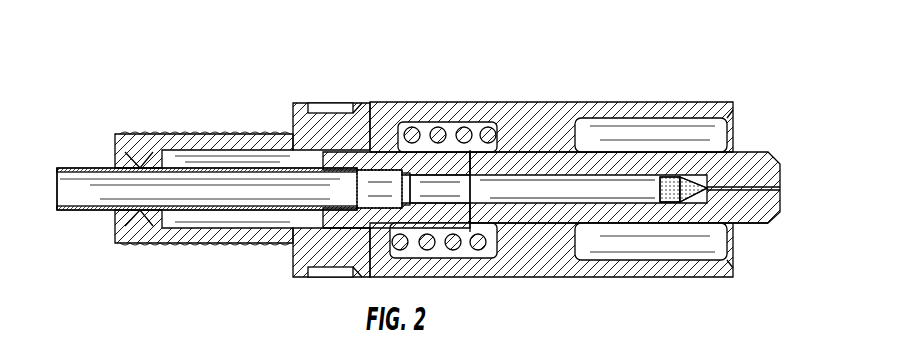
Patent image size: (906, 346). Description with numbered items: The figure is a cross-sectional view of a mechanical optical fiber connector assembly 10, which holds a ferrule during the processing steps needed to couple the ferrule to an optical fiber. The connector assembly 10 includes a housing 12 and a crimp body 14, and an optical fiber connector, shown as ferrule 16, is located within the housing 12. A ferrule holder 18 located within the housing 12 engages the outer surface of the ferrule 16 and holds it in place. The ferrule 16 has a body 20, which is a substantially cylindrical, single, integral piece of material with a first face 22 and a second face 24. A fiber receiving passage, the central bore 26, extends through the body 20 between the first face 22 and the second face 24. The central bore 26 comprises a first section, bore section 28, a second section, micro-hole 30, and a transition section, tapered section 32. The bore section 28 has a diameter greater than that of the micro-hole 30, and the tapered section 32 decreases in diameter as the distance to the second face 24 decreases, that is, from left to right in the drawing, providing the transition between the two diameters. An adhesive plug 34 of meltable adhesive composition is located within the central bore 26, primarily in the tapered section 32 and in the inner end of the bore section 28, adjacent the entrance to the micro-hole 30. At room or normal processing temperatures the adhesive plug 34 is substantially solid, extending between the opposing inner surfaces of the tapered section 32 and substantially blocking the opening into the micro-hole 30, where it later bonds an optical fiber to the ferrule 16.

The optical fiber connector assembly 10 is at (483, 52).
The housing 12 is at (565, 108).
The crimp body 14 is at (307, 127).
The ferrule 16 is at (748, 166).
The ferrule holder 18 is at (370, 272).
The body 20 is at (740, 220).
The first face 22 is at (470, 222).
The second face 24 is at (784, 170).
The central bore 26 is at (619, 200).
The bore section 28 is at (564, 200).
The micro-hole 30 is at (726, 194).
The tapered section 32 is at (690, 170).
The adhesive plug 34 is at (680, 204).